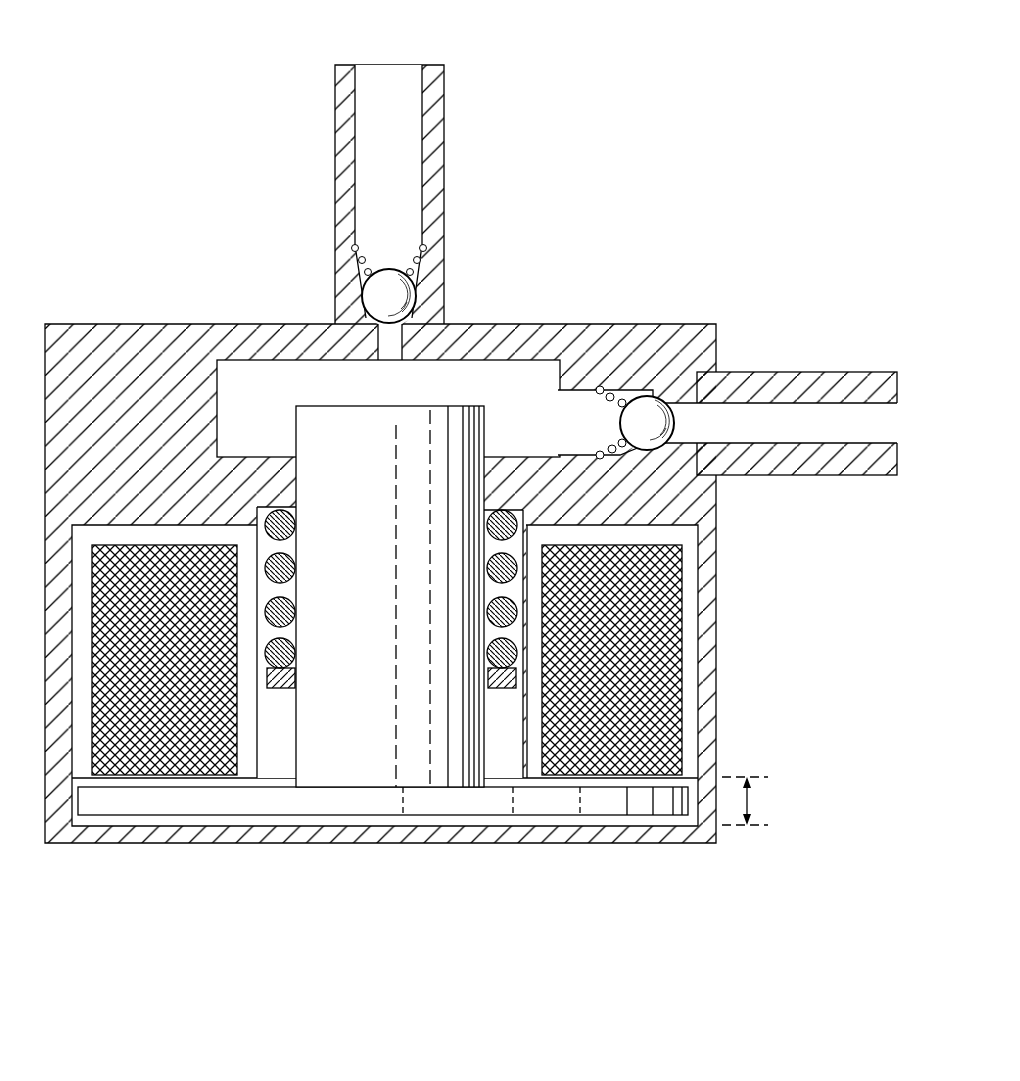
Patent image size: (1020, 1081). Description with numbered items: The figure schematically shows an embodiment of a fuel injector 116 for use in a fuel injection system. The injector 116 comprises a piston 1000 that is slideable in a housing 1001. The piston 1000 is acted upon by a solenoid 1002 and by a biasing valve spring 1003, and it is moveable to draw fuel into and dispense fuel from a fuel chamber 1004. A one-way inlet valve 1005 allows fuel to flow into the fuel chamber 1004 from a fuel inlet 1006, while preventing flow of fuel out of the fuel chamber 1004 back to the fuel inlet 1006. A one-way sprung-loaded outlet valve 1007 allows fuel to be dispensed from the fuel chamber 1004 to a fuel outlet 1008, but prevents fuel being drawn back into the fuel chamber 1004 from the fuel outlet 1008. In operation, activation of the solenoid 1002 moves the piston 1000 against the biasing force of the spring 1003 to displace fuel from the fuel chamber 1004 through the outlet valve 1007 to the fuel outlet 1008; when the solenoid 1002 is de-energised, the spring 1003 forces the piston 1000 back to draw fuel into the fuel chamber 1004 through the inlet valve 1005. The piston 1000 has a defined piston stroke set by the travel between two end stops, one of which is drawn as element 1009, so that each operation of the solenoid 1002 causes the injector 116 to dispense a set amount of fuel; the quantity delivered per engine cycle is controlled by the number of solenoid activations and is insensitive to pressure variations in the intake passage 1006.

The injector 116 is at (138, 72).
The piston 1000 is at (352, 417).
The housing 1001 is at (145, 375).
The solenoid 1002 is at (672, 653).
The biasing valve spring 1003 is at (293, 653).
The fuel chamber 1004 is at (523, 375).
The one-way inlet valve 1005 is at (647, 410).
The fuel inlet 1006 is at (802, 423).
The one-way sprung-loaded outlet valve 1007 is at (417, 298).
The fuel outlet 1008 is at (382, 83).
The stop plate 1009 is at (153, 805).